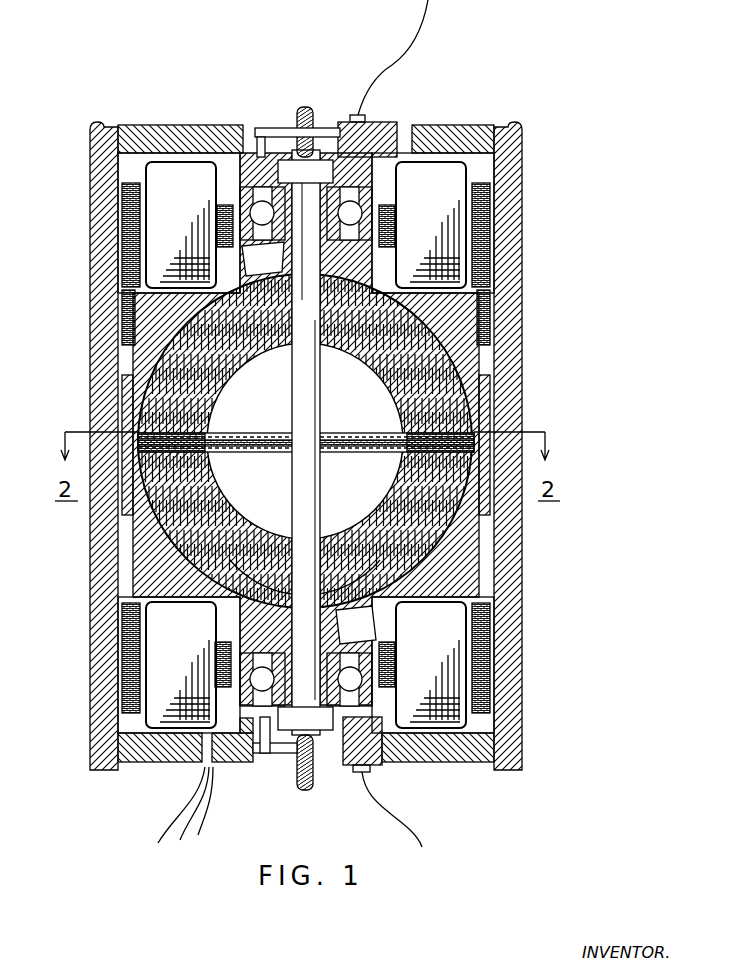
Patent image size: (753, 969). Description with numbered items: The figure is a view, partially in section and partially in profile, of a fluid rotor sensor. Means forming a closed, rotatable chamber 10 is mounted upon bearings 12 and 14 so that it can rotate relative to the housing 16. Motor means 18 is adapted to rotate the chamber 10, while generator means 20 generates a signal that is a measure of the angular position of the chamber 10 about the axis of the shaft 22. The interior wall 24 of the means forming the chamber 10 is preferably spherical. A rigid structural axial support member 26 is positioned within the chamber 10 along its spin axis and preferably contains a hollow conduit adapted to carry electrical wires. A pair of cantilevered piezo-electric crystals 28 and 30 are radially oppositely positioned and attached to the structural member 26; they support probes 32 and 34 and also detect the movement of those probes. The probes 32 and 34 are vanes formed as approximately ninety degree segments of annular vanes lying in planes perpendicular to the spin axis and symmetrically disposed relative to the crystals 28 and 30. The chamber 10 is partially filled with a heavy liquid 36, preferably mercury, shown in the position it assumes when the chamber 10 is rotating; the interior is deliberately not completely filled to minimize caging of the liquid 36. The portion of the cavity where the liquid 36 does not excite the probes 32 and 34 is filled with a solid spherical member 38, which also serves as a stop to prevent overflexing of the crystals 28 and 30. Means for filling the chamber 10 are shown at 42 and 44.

The chamber 10 is at (462, 330).
The bearing 12 is at (222, 187).
The bearing 14 is at (228, 642).
The housing 16 is at (97, 290).
The motor means 18 is at (442, 638).
The generator means 20 is at (440, 203).
The shaft 22 is at (293, 630).
The interior wall 24 is at (187, 329).
The structural axial support member 26 is at (304, 306).
The piezo-electric crystal 28 is at (270, 432).
The piezo-electric crystal 30 is at (340, 450).
The probe 32 is at (174, 458).
The probe 34 is at (458, 453).
The liquid 36 is at (378, 562).
The solid spherical member 38 is at (363, 401).
The means for filling chamber 42 is at (306, 231).
The means for filling chamber 44 is at (356, 620).